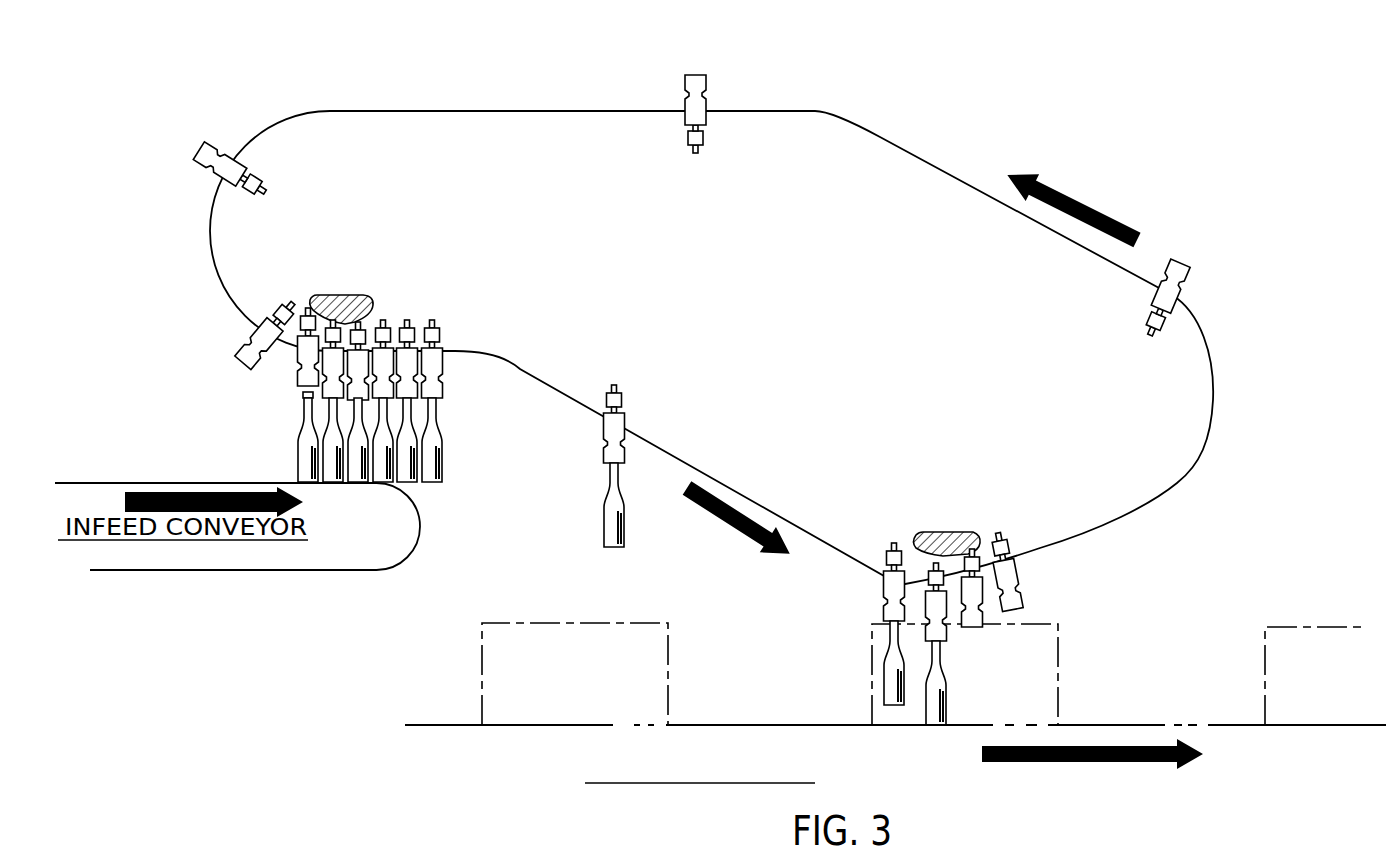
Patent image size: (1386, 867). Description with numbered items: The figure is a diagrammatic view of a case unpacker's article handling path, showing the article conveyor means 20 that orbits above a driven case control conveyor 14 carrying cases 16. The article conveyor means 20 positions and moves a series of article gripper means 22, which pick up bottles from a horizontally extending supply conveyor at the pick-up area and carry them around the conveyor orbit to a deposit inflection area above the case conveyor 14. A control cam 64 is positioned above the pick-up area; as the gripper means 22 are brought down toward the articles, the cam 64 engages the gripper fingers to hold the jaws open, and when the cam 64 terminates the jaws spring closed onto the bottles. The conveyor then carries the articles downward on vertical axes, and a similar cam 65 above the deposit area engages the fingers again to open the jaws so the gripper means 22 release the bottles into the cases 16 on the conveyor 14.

The case control conveyor 14 is at (455, 712).
The cases 16 is at (1058, 651).
The article conveyor means 20 is at (705, 473).
The article gripper means 22 is at (624, 441).
The control cam 64 is at (342, 296).
The cam 65 is at (955, 531).